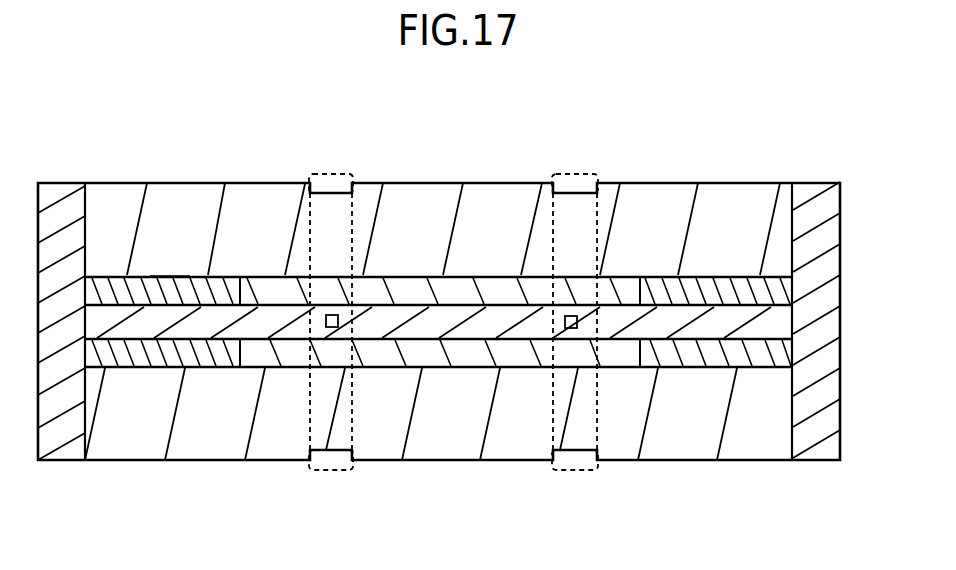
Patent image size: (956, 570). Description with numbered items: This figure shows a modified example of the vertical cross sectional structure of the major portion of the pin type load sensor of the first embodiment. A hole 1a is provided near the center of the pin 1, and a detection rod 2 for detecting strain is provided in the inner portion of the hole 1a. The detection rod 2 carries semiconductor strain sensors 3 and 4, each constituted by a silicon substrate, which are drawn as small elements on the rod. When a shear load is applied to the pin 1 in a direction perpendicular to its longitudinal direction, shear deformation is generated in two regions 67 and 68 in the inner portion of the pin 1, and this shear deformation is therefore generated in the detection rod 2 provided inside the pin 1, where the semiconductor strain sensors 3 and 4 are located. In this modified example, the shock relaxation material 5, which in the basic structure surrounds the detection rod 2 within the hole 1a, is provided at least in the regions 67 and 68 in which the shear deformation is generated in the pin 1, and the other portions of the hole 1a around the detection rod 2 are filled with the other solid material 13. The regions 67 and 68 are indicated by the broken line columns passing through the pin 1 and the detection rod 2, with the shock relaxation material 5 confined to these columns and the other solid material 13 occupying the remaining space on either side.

The pin 1 is at (108, 218).
The hole 1a is at (168, 274).
The other solid material 13 is at (219, 281).
The detection rod 2 is at (400, 322).
The semiconductor strain sensor 3 is at (333, 315).
The semiconductor strain sensor 4 is at (573, 316).
The shock relaxation material 5 is at (483, 282).
The region 67 is at (330, 474).
The region 68 is at (570, 477).